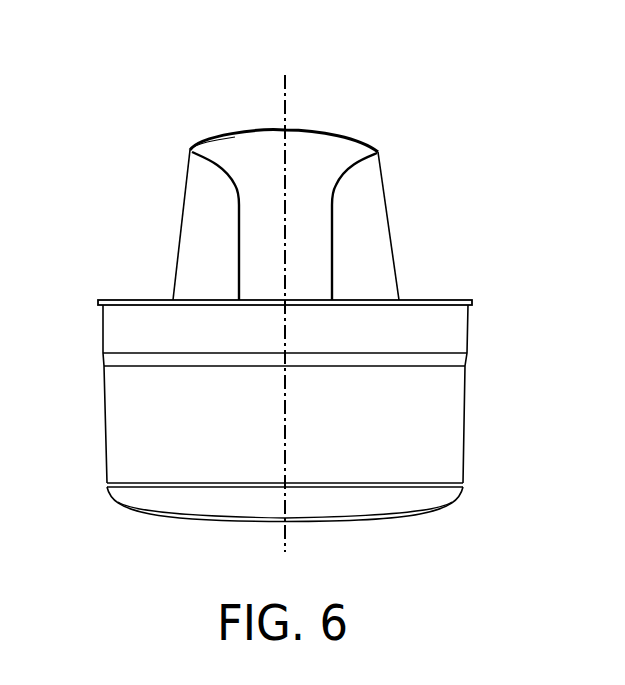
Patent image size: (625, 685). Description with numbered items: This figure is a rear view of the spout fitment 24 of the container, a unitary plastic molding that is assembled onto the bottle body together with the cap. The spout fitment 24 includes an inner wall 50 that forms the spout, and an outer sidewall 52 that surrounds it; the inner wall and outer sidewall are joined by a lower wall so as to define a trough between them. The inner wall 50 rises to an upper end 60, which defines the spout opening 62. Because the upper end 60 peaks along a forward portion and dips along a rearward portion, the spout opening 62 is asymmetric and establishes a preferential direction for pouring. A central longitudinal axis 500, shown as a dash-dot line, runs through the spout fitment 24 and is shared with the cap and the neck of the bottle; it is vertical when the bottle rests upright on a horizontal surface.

The spout fitment 24 is at (145, 202).
The inner wall 50 is at (385, 220).
The outer sidewall 52 is at (440, 423).
The upper end 60 is at (380, 152).
The spout opening 62 is at (311, 113).
The central longitudinal axis 500 is at (285, 410).